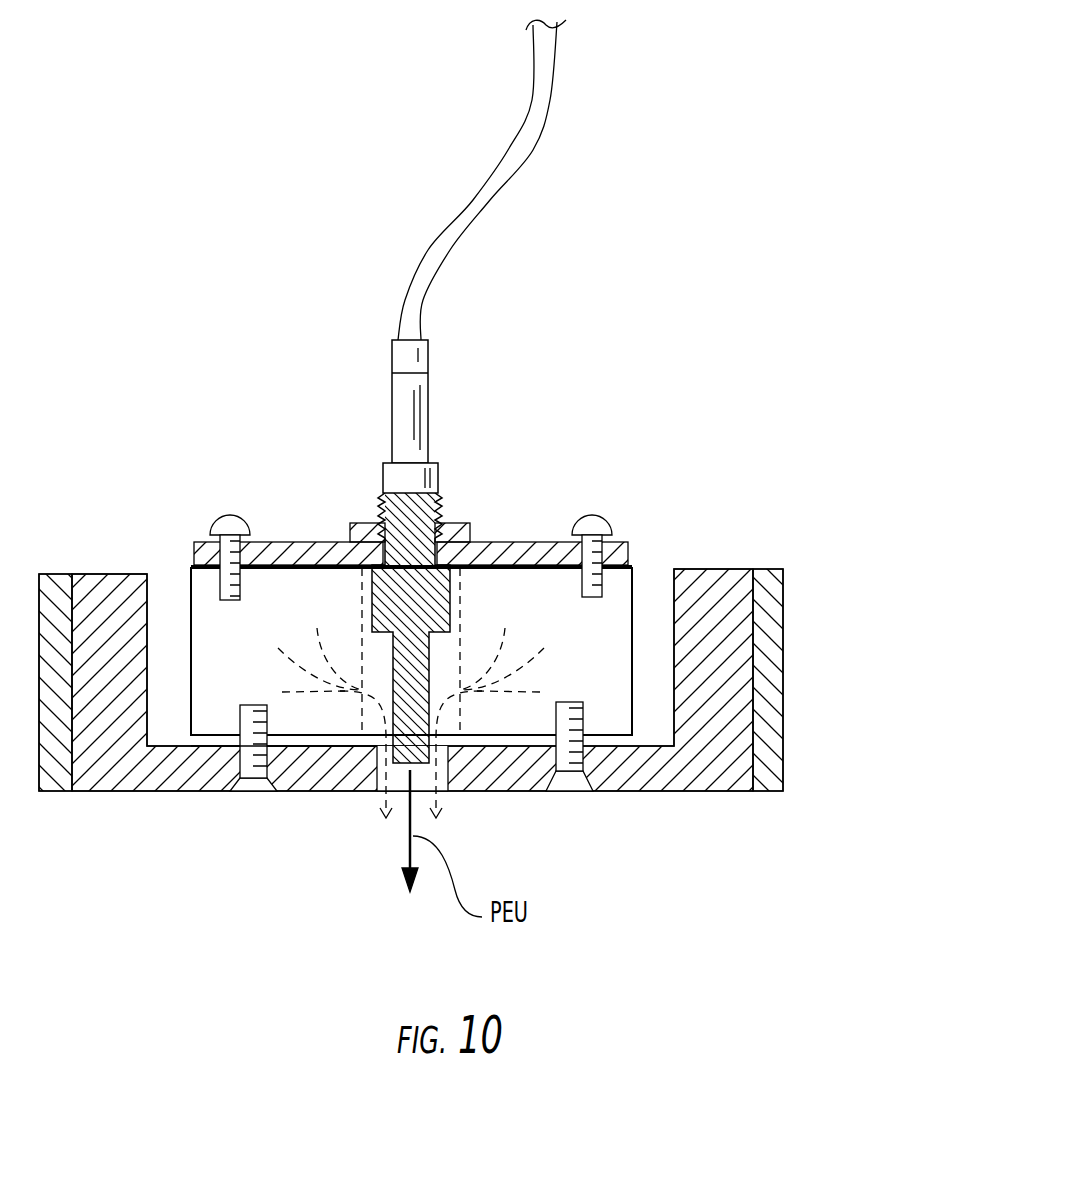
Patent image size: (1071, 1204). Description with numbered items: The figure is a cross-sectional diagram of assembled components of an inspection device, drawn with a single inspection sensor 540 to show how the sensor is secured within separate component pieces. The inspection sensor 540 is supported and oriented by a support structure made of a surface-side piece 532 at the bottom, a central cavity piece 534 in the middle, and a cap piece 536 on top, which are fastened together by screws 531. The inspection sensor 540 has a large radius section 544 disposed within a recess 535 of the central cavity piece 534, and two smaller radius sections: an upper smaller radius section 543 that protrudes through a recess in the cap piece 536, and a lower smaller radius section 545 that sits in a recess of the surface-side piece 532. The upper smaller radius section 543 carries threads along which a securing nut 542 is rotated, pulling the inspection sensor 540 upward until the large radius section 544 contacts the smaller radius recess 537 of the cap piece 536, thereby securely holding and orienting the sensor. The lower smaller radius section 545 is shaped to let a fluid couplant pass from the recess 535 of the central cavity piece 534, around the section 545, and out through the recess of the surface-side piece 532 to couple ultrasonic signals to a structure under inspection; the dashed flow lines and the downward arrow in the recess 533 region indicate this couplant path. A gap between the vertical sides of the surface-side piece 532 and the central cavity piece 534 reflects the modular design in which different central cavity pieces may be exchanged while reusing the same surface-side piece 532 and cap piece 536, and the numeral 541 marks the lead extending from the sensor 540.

The screws 531 is at (597, 517).
The surface-side piece 532 is at (105, 768).
The outlet channel 533 is at (360, 774).
The central cavity piece 534 is at (633, 613).
The recess 535 is at (486, 622).
The cap piece 536 is at (547, 543).
The smaller radius recess 537 is at (454, 552).
The inspection sensor 540 is at (474, 344).
The cable 541 is at (532, 110).
The securing nut 542 is at (453, 523).
The smaller radius section 543 is at (380, 507).
The large radius section 544 is at (358, 605).
The smaller radius section 545 is at (357, 748).